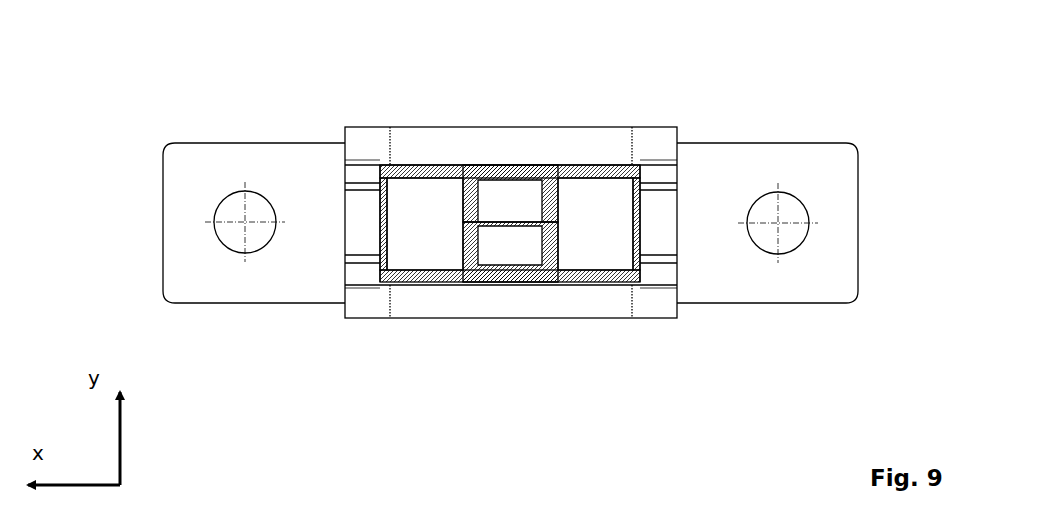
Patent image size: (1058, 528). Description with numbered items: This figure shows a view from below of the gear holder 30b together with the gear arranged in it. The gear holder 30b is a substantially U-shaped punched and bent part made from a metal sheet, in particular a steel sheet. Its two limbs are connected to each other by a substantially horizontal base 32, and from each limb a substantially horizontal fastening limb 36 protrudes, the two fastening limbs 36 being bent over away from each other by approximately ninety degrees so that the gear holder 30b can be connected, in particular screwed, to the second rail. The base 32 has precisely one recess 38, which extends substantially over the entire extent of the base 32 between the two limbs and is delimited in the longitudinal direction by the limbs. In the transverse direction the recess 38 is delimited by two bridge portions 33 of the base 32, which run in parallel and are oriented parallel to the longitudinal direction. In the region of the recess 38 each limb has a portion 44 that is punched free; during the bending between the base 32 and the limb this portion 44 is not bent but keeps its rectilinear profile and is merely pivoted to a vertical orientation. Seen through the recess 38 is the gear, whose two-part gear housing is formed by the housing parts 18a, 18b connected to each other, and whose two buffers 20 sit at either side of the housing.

The gear holder 30b is at (220, 108).
The base 32 is at (522, 290).
The bridge portions 33 is at (528, 148).
The recess 38 is at (618, 162).
The buffers 20 is at (418, 200).
The housing part 18b is at (487, 198).
The housing part 18a is at (487, 243).
The portion 44 is at (363, 225).
The fastening limb 36 is at (207, 260).